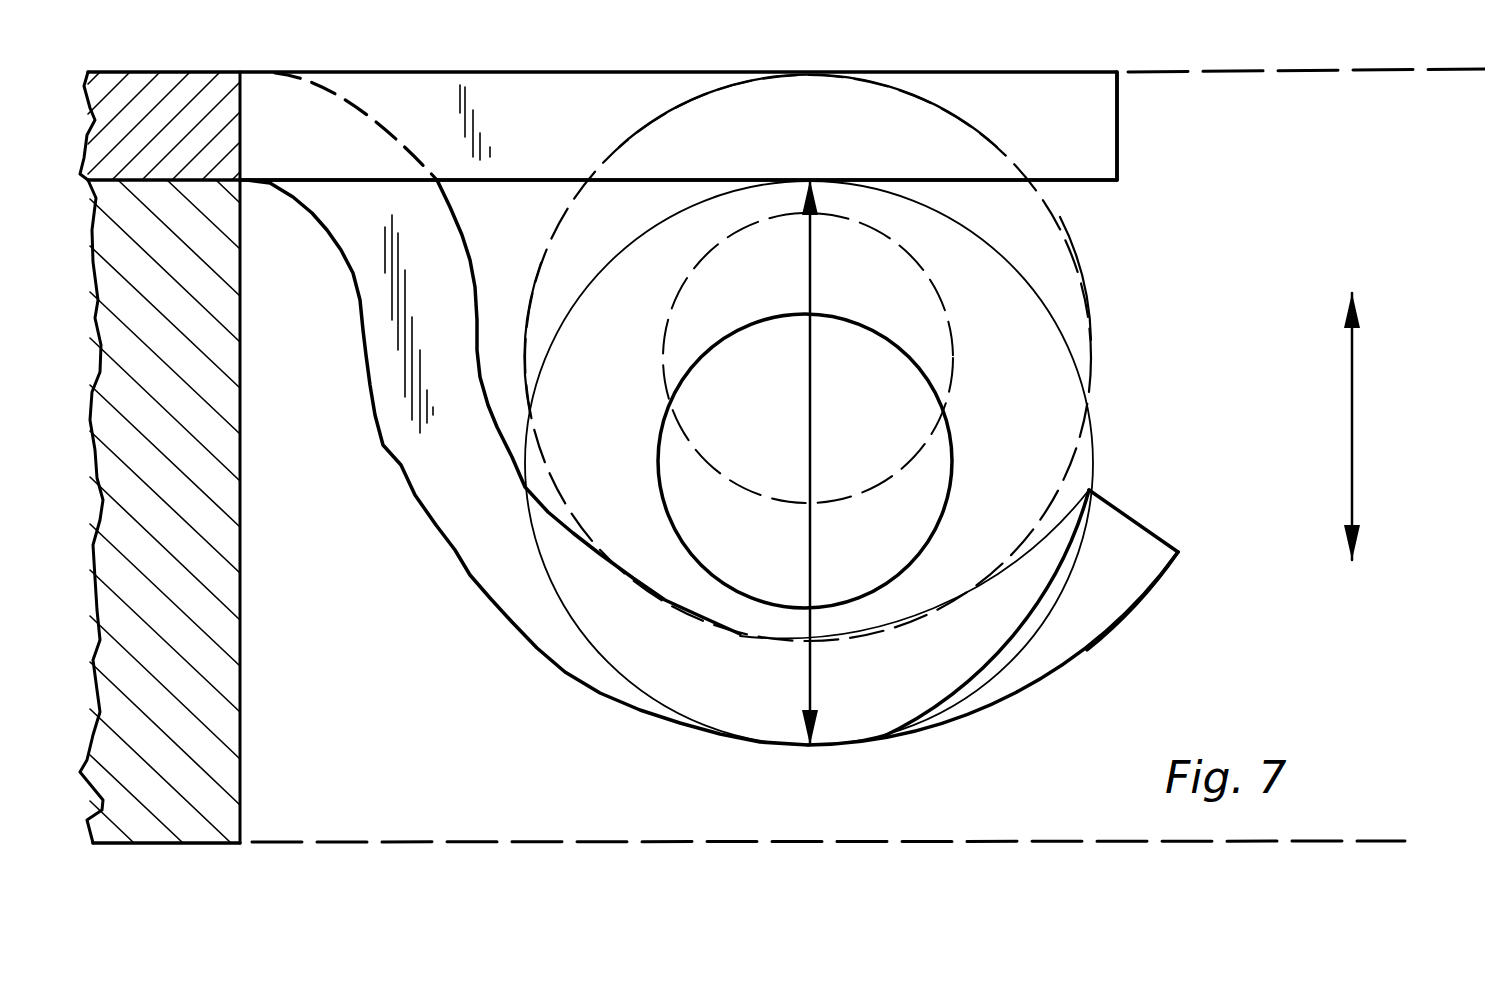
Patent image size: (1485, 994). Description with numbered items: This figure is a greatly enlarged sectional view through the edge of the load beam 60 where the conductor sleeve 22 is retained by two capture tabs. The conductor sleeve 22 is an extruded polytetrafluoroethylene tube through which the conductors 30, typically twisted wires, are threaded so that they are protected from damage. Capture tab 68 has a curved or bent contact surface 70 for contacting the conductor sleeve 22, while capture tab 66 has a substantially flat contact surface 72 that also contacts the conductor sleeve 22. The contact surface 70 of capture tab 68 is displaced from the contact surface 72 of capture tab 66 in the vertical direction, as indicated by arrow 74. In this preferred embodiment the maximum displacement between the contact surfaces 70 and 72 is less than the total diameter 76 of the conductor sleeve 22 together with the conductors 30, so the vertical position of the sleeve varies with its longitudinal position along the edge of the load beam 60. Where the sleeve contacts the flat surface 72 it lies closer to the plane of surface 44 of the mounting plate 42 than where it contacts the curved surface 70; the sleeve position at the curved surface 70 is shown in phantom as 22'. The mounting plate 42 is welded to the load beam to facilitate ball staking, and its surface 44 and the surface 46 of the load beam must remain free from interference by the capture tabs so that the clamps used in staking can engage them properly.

The conductor sleeve 22 is at (725, 462).
The conductor sleeve at contact surface 70 22' is at (741, 357).
The conductors 30 is at (962, 447).
The mounting plate 42 is at (213, 670).
The surface of mounting plate 44 is at (140, 843).
The surface of load beam 46 is at (113, 75).
The load beam 60 is at (173, 90).
The capture tab 66 is at (1117, 118).
The capture tab 68 is at (1157, 587).
The curved contact surface 70 is at (833, 640).
The flat contact surface 72 is at (1088, 180).
The arrow 74 is at (1352, 363).
The total diameter 76 is at (811, 548).